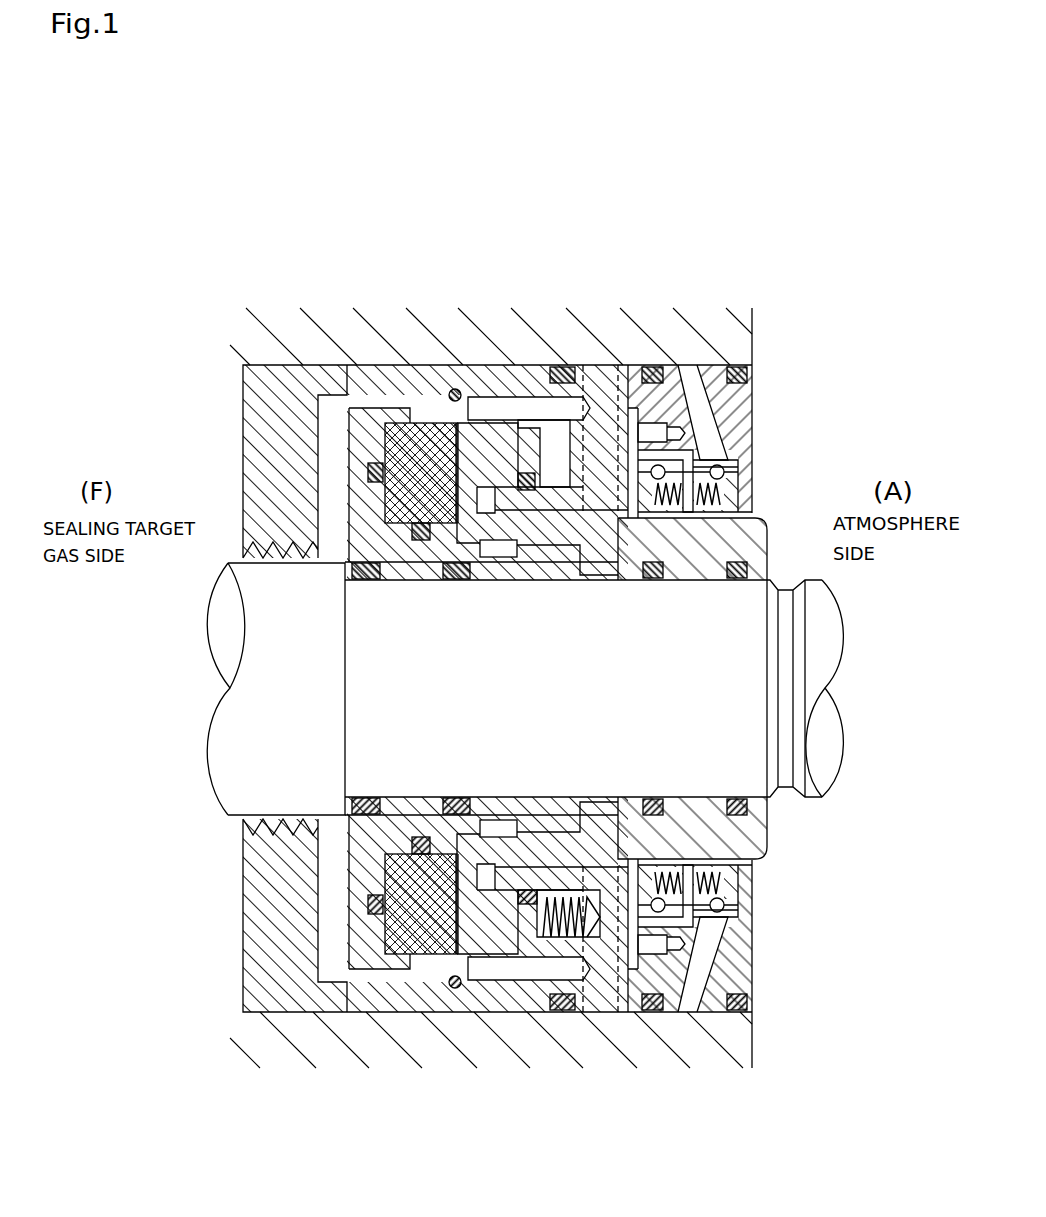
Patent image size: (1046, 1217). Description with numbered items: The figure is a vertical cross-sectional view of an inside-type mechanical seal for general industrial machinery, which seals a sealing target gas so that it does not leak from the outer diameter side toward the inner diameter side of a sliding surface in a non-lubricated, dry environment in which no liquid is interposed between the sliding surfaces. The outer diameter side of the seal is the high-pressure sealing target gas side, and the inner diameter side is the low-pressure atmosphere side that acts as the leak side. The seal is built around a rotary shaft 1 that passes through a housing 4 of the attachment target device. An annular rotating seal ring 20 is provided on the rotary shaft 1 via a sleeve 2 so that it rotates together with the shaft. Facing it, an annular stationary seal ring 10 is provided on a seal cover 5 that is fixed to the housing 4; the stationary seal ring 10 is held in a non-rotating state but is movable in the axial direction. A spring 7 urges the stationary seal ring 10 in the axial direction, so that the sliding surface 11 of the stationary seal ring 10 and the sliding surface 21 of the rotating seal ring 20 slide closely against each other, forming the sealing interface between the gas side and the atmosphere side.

The rotary shaft 1 is at (815, 586).
The sleeve 2 is at (378, 952).
The housing 4 is at (313, 322).
The seal cover 5 is at (598, 995).
The spring 7 is at (550, 940).
The stationary seal ring 10 is at (500, 408).
The sliding surface 11 is at (453, 467).
The rotating seal ring 20 is at (428, 413).
The sliding surface 21 is at (468, 480).